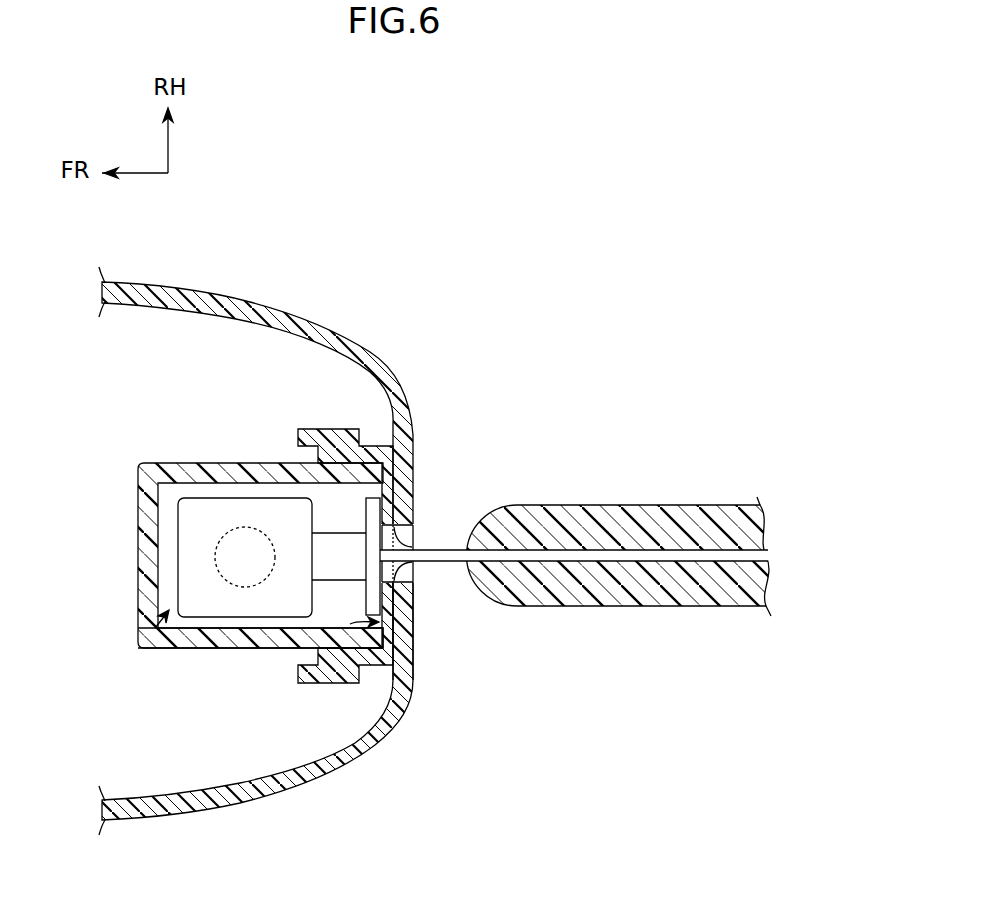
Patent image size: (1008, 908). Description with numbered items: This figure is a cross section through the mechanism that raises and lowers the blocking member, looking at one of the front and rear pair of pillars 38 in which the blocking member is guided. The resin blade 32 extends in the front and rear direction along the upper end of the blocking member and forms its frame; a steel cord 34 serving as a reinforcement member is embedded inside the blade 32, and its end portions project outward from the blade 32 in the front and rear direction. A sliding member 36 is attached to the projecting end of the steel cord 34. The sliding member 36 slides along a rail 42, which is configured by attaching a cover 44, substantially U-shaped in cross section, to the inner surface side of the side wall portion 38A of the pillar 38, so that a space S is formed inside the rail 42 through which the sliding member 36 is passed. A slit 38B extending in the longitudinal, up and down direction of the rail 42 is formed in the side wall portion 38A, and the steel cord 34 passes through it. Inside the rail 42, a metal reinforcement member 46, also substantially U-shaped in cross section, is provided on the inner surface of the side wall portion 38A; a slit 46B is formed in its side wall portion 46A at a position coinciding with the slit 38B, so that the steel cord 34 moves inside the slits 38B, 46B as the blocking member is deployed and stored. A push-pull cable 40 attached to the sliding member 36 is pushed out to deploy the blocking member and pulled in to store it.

The blade 32 is at (605, 505).
The steel cord 34 is at (437, 549).
The sliding member 36 is at (200, 505).
The pillar 38 is at (265, 298).
The side wall portion 38A is at (415, 652).
The slit 38B is at (414, 574).
The push-pull cable 40 is at (245, 557).
The rail 42 is at (198, 649).
The cover 44 is at (138, 555).
The reinforcement member 46 is at (342, 684).
The side wall portion 46A is at (412, 545).
The slit 46B is at (419, 548).
The space S is at (140, 637).